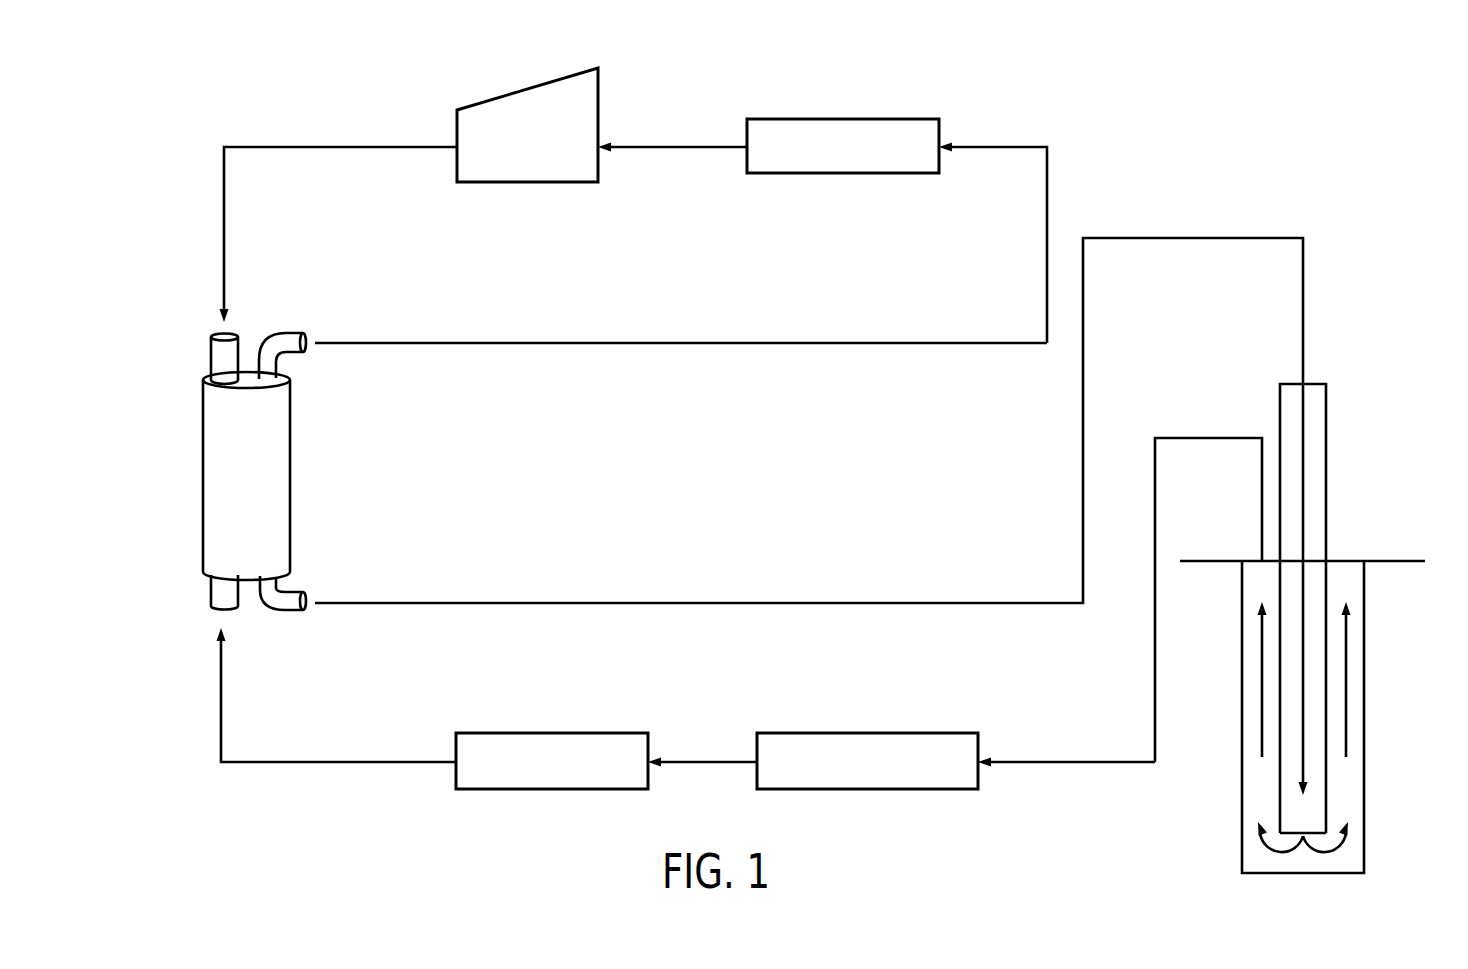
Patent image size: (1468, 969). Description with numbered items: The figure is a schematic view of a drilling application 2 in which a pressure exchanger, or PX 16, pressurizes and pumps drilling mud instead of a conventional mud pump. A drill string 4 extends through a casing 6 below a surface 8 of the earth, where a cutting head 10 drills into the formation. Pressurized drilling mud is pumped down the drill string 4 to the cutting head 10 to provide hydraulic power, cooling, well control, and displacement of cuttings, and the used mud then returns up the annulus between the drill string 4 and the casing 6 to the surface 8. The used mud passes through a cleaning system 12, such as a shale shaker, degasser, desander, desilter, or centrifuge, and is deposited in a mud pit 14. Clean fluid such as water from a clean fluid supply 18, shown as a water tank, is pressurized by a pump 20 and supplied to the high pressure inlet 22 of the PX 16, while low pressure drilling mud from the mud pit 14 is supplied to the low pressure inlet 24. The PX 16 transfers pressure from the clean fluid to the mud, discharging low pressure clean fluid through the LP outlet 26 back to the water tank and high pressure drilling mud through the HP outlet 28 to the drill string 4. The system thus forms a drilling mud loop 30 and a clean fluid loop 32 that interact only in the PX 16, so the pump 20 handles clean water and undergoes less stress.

The drilling application 2 is at (163, 135).
The drill string 4 is at (1326, 453).
The casing 6 is at (1364, 693).
The surface 8 is at (1393, 561).
The cutting head 10 is at (1315, 833).
The cleaning system 12 is at (868, 733).
The mud pit 14 is at (553, 733).
The PX 16 is at (203, 475).
The clean fluid supply 18 is at (856, 173).
The pump 20 is at (527, 182).
The high pressure inlet 22 is at (204, 357).
The low pressure inlet 24 is at (211, 595).
The LP outlet 26 is at (280, 322).
The HP outlet 28 is at (270, 612).
The drilling mud loop 30 is at (311, 832).
The clean fluid loop 32 is at (668, 108).